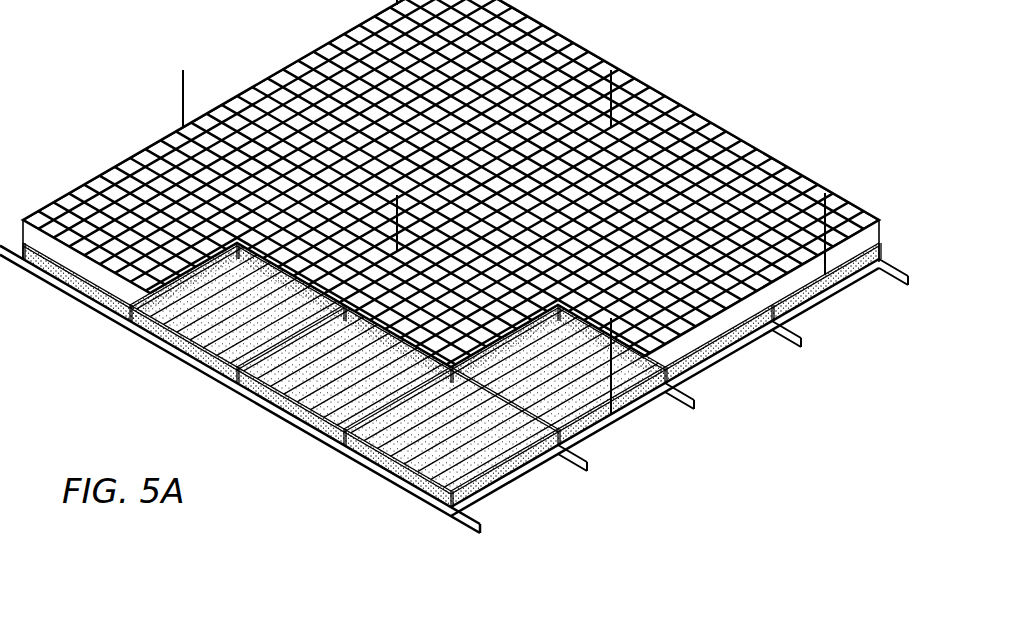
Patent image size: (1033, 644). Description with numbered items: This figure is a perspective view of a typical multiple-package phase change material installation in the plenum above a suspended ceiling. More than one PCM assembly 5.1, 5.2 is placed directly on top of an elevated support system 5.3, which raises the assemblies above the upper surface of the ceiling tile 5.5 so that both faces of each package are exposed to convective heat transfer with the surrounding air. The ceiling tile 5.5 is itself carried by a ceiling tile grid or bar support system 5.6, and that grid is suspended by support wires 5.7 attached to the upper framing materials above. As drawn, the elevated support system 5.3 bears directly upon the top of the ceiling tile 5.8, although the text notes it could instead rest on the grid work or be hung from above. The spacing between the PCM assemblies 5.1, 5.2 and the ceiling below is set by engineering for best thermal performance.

The PCM assembly 5.1 is at (786, 302).
The PCM assembly 5.2 is at (658, 156).
The elevated support system 5.3 is at (362, 403).
The ceiling tile 5.5 is at (510, 487).
The ceiling tile grid or bar support system 5.6 is at (630, 434).
The support wires 5.7 is at (174, 97).
The top of the ceiling tile 5.8 is at (683, 374).